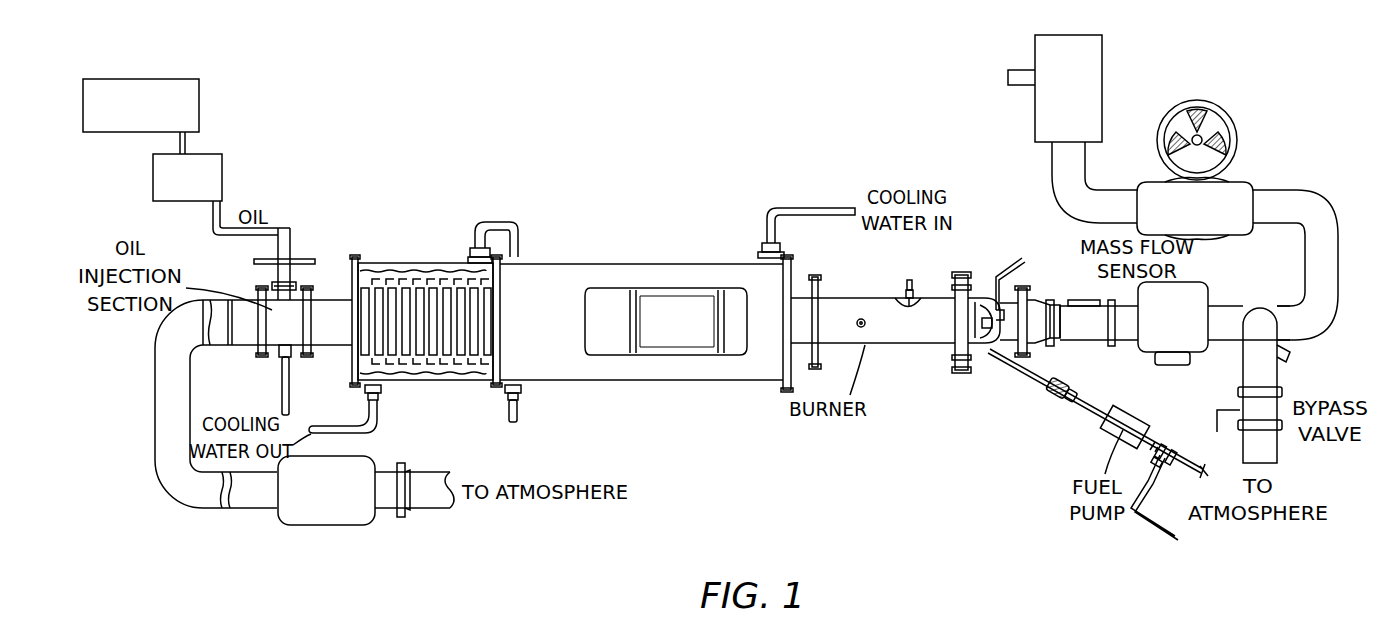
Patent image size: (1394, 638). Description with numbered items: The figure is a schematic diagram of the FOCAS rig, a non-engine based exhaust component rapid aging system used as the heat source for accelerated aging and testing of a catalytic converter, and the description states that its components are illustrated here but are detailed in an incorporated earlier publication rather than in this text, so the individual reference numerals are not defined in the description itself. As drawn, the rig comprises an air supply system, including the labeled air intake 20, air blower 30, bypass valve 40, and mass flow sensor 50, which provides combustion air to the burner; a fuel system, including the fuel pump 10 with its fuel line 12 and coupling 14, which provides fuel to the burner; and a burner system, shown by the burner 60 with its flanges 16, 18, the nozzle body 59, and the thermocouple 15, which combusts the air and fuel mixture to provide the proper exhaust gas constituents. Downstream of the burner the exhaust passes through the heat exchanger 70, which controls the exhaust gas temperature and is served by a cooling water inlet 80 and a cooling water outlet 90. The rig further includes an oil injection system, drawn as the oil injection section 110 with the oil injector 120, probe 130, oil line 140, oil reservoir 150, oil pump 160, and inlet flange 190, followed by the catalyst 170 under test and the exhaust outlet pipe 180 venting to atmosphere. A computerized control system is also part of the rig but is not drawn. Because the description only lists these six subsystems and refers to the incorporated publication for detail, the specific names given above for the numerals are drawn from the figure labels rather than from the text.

The fuel pump 10 is at (1128, 422).
The fuel line 12 is at (1043, 384).
The fuel line coupling 14 is at (1060, 398).
The thermocouple 15 is at (1012, 268).
The flange 16 is at (990, 348).
The flange 18 is at (956, 340).
The air intake box 20 is at (1035, 55).
The air blower 30 is at (1241, 182).
The bypass valve 40 is at (1278, 413).
The mass flow sensor pipe 50 is at (1084, 300).
The burner nozzle body 59 is at (996, 368).
The burner 60 is at (843, 318).
The heat exchanger tube 70 is at (608, 264).
The cooling water inlet 80 is at (815, 208).
The cooling water outlet 90 is at (384, 411).
The oil injection section 110 is at (293, 325).
The oil injector 120 is at (276, 282).
The probe 130 is at (282, 380).
The oil line 140 is at (292, 233).
The oil reservoir 150 is at (200, 112).
The oil pump 160 is at (222, 184).
The catalyst 170 is at (321, 526).
The exhaust outlet pipe 180 is at (428, 508).
The inlet flange 190 is at (256, 345).